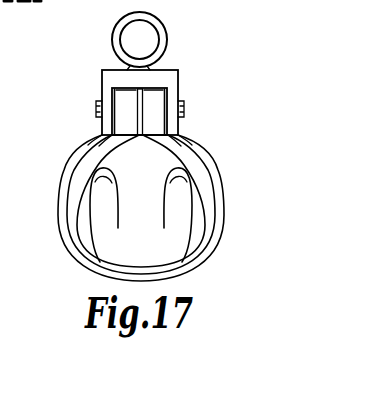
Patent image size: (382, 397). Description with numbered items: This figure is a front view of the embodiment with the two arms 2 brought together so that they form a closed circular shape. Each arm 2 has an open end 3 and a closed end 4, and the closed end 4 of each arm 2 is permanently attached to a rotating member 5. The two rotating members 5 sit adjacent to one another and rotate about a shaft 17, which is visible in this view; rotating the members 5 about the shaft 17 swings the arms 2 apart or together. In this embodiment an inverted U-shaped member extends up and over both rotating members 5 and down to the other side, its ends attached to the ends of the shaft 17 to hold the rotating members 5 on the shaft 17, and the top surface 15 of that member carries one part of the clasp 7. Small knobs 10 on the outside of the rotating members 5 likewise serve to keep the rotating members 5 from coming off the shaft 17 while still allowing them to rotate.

The arm 2 is at (85, 263).
The open end 3 is at (141, 201).
The closed end 4 is at (112, 143).
The rotating member 5 is at (127, 98).
The clasp 7 is at (112, 39).
The knob 10 is at (96, 113).
The top surface 15 is at (170, 70).
The shaft 17 is at (110, 103).